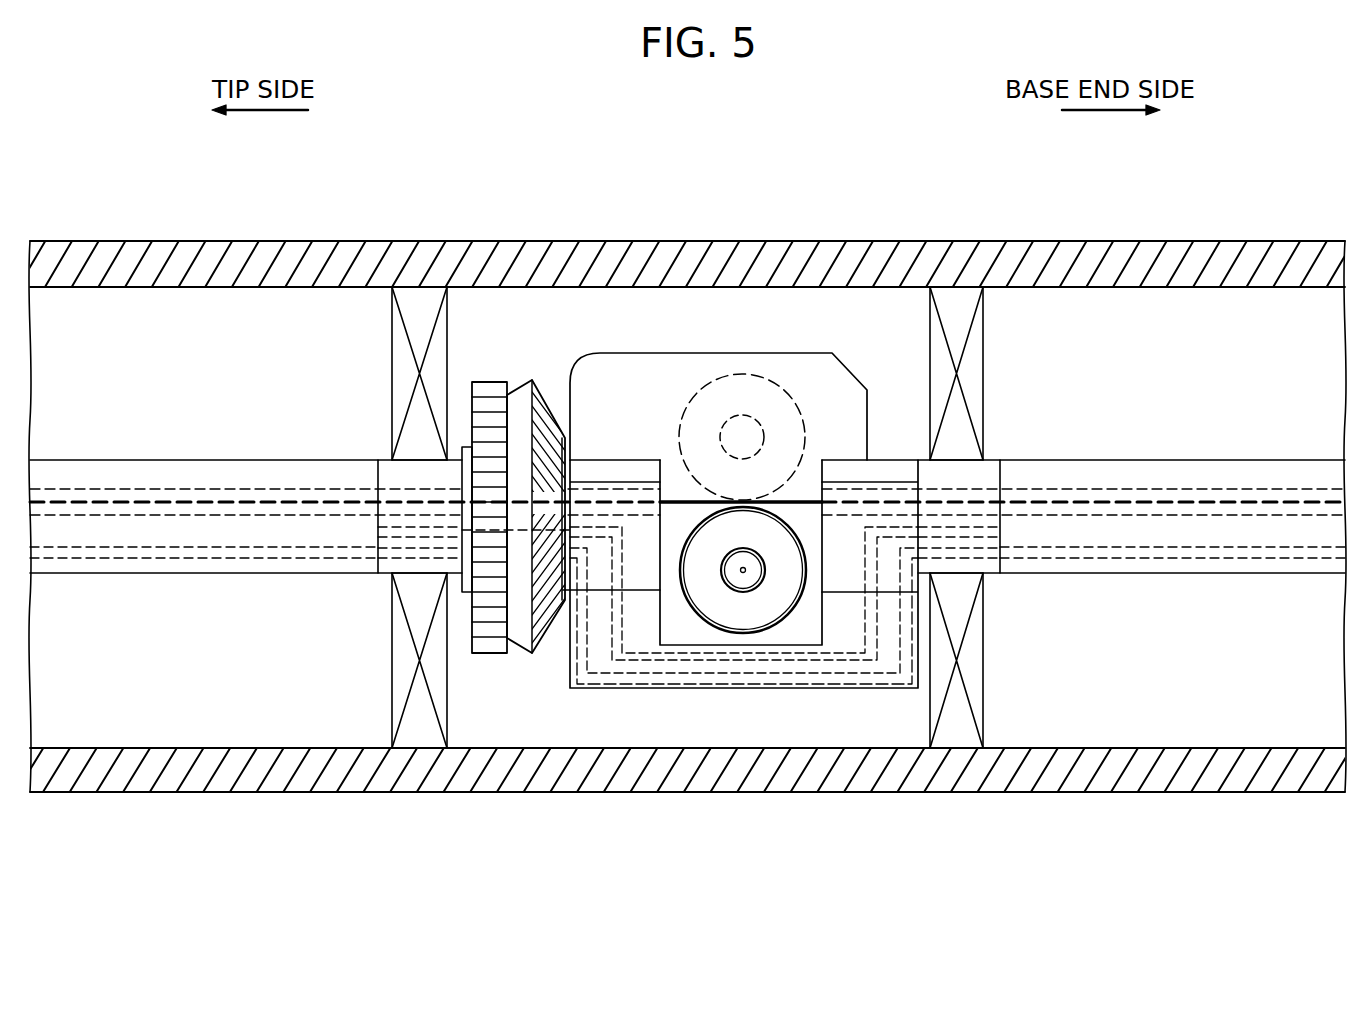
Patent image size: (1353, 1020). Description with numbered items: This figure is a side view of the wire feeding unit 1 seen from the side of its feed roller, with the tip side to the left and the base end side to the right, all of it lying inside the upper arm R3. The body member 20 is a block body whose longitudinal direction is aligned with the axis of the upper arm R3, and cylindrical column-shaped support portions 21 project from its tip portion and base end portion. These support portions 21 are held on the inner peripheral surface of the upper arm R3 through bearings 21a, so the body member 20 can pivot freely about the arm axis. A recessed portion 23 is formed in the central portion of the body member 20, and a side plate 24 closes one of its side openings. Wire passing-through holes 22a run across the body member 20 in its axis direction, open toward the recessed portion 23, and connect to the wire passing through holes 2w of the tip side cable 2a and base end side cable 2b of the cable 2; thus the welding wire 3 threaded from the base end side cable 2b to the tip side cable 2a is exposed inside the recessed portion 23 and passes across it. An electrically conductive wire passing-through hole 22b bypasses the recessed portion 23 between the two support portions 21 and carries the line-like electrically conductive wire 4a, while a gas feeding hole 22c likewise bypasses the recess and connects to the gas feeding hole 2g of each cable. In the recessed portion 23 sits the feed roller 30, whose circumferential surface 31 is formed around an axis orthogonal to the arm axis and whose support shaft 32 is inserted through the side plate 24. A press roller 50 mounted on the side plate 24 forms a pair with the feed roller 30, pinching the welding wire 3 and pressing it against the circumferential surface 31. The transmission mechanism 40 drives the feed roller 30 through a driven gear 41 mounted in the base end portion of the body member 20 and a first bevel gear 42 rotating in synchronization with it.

The wire feeding unit 1 is at (798, 518).
The cable 2 is at (687, 502).
The tip side cable 2a is at (260, 578).
The base end side cable 2b is at (1146, 585).
The gas feeding hole 2g is at (112, 557).
The wire passing through hole 2w is at (196, 494).
The welding wire 3 is at (804, 497).
The electrically conductive wire 4a is at (613, 620).
The body member 20 is at (798, 640).
The support portion 21 is at (389, 574).
The bearing 21a is at (397, 360).
The wire passing-through hole 22a is at (975, 500).
The electrically conductive wire passing-through hole 22b is at (746, 652).
The gas feeding hole 22c is at (790, 681).
The recessed portion 23 is at (668, 618).
The side plate 24 is at (654, 366).
The feed roller 30 is at (754, 681).
The circumferential surface 31 is at (808, 562).
The support shaft 32 is at (736, 573).
The transmission mechanism 40 is at (514, 446).
The driven gear 41 is at (490, 655).
The first bevel gear 42 is at (523, 648).
The press roller 50 is at (780, 382).
The upper arm R3 is at (1124, 262).